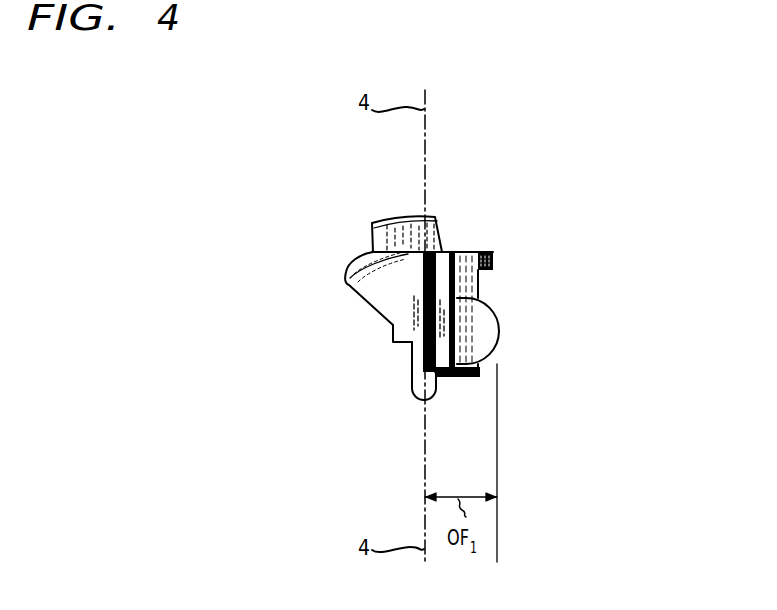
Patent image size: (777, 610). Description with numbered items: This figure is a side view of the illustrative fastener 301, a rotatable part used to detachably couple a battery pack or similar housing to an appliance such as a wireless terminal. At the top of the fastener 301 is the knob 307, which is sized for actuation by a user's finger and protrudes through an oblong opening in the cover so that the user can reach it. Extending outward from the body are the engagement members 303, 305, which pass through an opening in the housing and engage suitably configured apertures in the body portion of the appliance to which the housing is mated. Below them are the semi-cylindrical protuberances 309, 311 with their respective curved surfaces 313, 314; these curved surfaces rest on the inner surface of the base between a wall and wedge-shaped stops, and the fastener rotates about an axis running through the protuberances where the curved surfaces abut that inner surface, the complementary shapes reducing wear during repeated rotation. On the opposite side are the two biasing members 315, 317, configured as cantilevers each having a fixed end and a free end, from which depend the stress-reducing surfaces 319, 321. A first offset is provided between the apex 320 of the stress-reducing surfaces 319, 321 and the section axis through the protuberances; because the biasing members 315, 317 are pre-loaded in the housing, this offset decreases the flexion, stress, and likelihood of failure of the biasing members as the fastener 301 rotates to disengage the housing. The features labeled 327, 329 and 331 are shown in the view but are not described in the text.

The fastener 301 is at (454, 240).
The engagement member 303 is at (280, 276).
The engagement member 305 is at (350, 276).
The knob 307 is at (373, 248).
The semi-cylindrical protuberance 309 is at (329, 402).
The semi-cylindrical protuberance 311 is at (329, 402).
The curved surface 313 is at (329, 402).
The curved surface 314 is at (410, 377).
The biasing member 315 is at (581, 254).
The biasing member 317 is at (482, 279).
The stress-reducing surface 319 is at (572, 317).
The stress-reducing surface 321 is at (572, 317).
The apex 320 is at (493, 309).
The shoulder step 327 is at (321, 344).
The shoulder step 329 is at (391, 328).
The body wall 331 is at (465, 252).